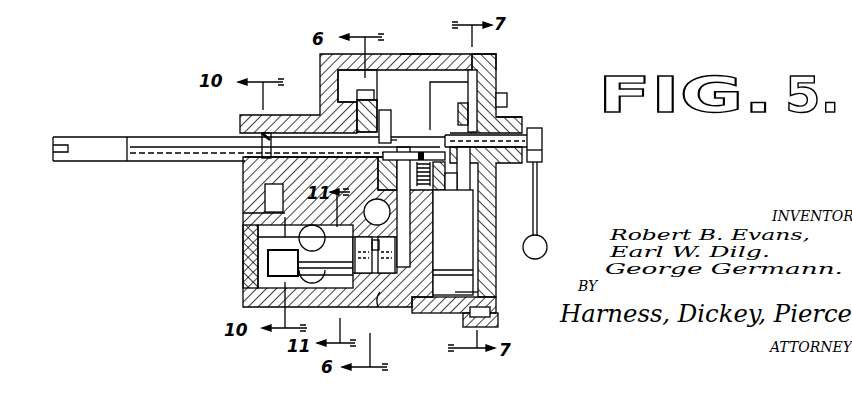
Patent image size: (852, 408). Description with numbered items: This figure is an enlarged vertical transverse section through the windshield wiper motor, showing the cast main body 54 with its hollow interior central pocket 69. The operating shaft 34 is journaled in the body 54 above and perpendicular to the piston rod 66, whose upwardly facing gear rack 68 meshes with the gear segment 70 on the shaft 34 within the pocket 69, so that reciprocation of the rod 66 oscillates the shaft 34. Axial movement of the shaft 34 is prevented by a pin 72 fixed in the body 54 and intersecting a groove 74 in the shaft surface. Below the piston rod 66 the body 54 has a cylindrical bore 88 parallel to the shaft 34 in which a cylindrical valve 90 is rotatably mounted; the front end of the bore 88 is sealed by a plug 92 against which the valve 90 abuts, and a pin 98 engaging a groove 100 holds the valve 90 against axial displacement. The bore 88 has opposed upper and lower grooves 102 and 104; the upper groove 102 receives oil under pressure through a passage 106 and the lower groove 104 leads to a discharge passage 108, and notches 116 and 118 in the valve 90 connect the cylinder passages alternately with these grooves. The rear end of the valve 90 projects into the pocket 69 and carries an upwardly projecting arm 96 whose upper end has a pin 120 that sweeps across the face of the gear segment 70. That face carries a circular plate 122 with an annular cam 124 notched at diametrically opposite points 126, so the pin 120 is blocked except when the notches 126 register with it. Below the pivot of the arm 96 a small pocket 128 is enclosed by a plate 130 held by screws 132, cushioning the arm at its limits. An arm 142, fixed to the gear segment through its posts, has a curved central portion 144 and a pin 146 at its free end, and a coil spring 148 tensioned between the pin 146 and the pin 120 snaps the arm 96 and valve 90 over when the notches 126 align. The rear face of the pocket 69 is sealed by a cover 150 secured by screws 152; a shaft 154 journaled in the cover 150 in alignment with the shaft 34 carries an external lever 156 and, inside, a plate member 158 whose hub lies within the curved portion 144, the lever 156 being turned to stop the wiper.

The operating shaft 34 is at (196, 136).
The main body 54 is at (440, 33).
The piston rod 66 is at (400, 227).
The gear rack 68 is at (386, 194).
The pocket 69 is at (466, 117).
The gear segment 70 is at (372, 72).
The pin 72 is at (246, 116).
The groove 74 is at (248, 156).
The cylindrical bore 88 is at (392, 268).
The cylindrical valve 90 is at (376, 268).
The plug 92 is at (248, 252).
The arm 96 is at (412, 232).
The pin 98 is at (414, 275).
The groove 100 is at (413, 250).
The upper groove 102 is at (260, 238).
The lower groove 104 is at (250, 285).
The passage 106 is at (244, 214).
The passage 108 is at (313, 284).
The notch 116 is at (270, 262).
The notch 118 is at (305, 250).
The pin 120 is at (395, 140).
The circular plate 122 is at (376, 97).
The annular cam 124 is at (379, 112).
The notches 126 is at (391, 126).
The small pocket 128 is at (410, 275).
The plate 130 is at (478, 292).
The screws 132 is at (473, 276).
The arm 142 is at (484, 170).
The central portion 144 is at (497, 89).
The pin 146 is at (449, 198).
The coil spring 148 is at (427, 156).
The cover 150 is at (497, 54).
The screws 152 is at (508, 100).
The shaft 154 is at (543, 150).
The lever 156 is at (539, 196).
The plate member 158 is at (462, 130).